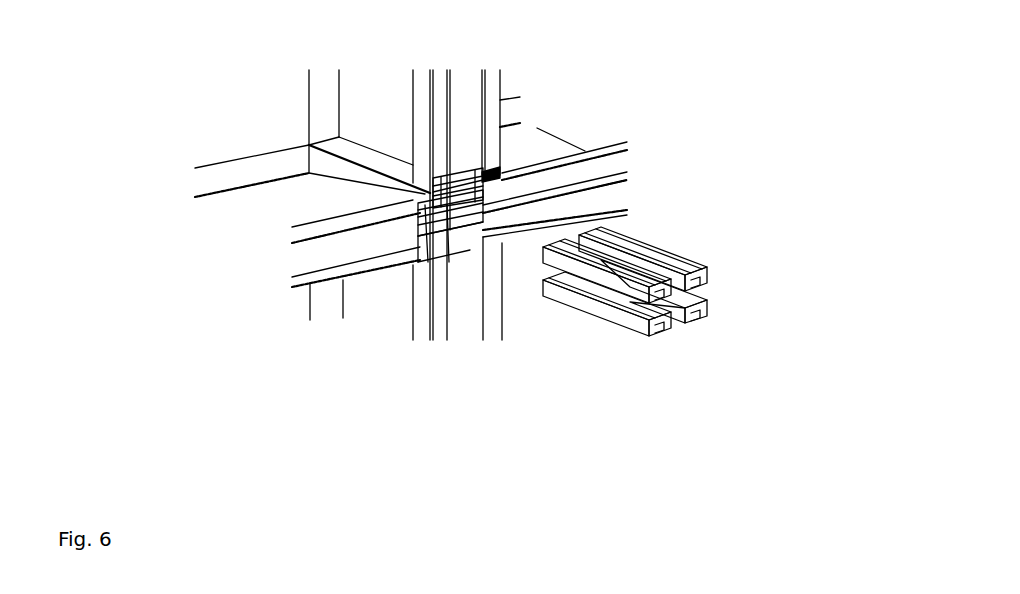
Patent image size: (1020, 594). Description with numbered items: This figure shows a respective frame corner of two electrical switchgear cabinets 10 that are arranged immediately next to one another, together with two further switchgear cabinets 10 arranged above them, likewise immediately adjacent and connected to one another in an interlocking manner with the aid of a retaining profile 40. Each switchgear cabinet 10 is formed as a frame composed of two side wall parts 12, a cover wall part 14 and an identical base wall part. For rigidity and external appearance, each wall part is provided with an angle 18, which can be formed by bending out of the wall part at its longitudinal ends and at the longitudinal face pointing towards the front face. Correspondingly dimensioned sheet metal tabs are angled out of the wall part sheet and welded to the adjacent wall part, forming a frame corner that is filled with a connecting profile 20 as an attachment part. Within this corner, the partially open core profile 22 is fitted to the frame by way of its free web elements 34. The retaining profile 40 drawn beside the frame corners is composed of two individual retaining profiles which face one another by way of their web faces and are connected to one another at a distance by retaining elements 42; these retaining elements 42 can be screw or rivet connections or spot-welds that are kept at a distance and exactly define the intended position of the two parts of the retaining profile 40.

The electrical switchgear cabinet 10 is at (584, 386).
The side wall part 12 is at (392, 119).
The cover wall part 14 is at (287, 219).
The angle 18 is at (488, 91).
The connecting profile 20 is at (415, 238).
The core profile 22 is at (425, 210).
The free web elements 34 is at (472, 192).
The retaining profile 40 is at (659, 284).
The retaining elements 42 is at (700, 298).